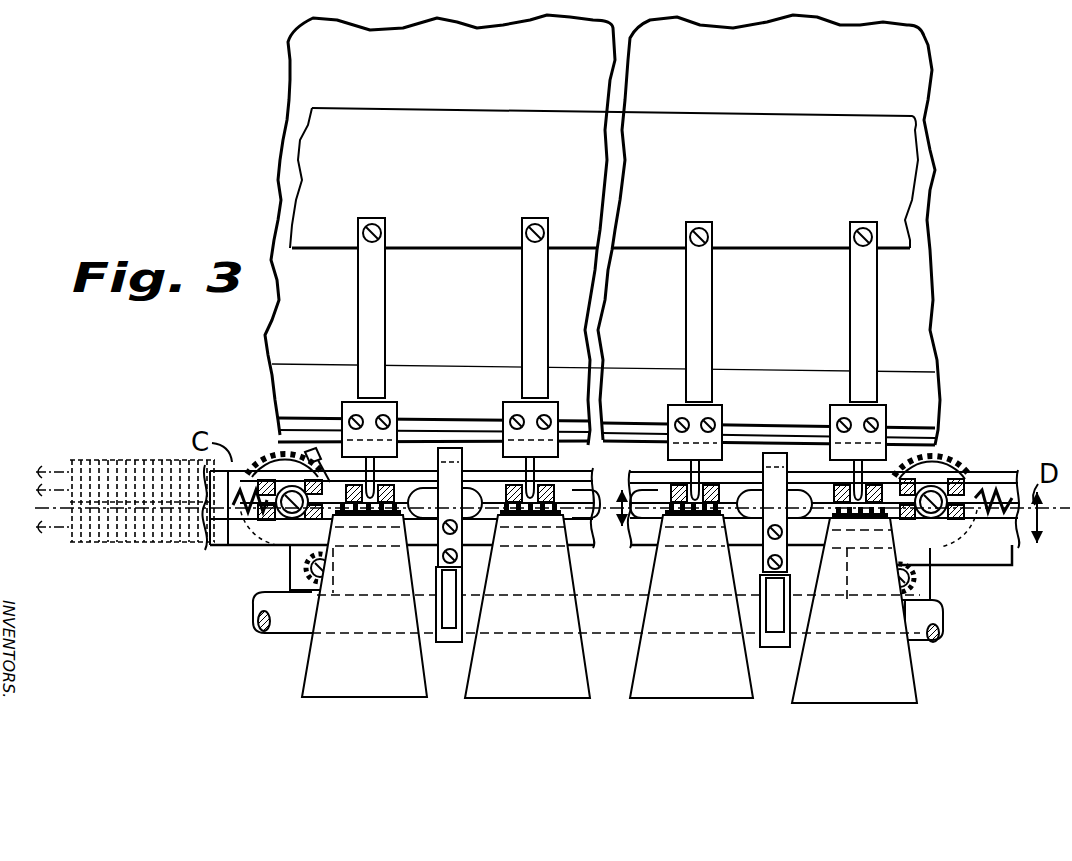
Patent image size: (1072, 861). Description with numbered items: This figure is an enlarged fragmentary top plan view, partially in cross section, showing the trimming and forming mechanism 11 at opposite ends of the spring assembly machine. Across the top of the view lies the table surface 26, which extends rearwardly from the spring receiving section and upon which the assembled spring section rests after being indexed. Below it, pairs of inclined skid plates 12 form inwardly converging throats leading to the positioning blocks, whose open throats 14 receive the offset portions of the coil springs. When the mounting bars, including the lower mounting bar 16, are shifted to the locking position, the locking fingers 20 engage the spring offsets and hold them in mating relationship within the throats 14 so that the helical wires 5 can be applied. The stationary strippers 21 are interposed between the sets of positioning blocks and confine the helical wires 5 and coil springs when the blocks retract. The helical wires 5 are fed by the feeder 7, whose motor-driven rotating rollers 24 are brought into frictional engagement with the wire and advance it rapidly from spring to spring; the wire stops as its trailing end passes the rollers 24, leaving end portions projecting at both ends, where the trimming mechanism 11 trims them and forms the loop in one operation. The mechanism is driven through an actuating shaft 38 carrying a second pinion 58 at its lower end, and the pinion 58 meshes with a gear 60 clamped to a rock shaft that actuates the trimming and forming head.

The table surface 26 is at (318, 86).
The trimming and forming mechanism 11 is at (270, 446).
The gear 60 is at (280, 436).
The stationary strippers 21 is at (467, 502).
The locking fingers 20 is at (374, 470).
The helical wires 5 is at (223, 545).
The lower mounting bar 16 is at (987, 546).
The second pinion 58 is at (297, 570).
The actuating shaft 38 is at (323, 582).
The inclined skid plates 12 is at (323, 657).
The open throats 14 is at (550, 523).
The rotating rollers 24 is at (121, 545).
The feeder 7 is at (831, 523).